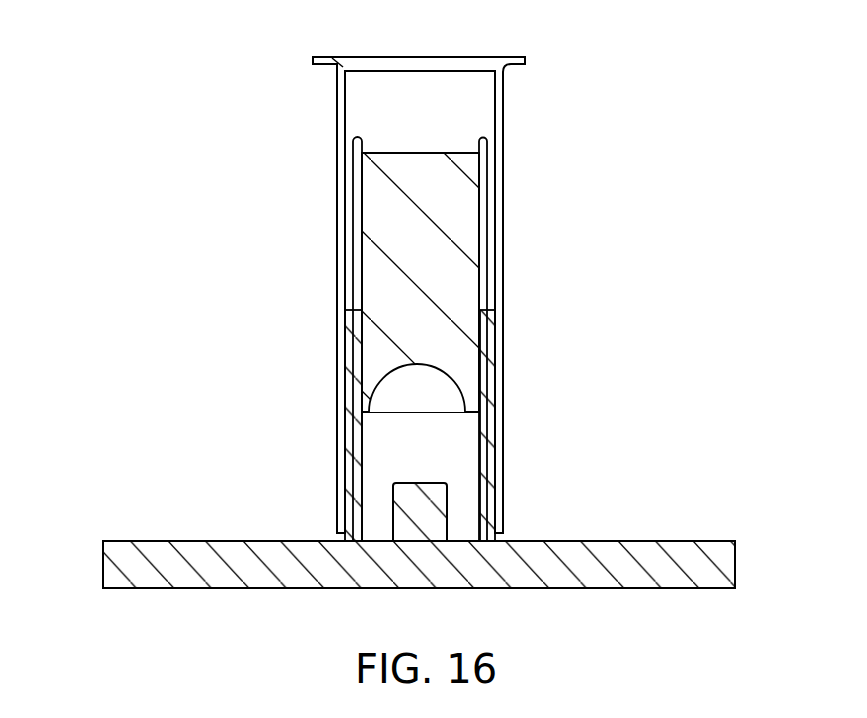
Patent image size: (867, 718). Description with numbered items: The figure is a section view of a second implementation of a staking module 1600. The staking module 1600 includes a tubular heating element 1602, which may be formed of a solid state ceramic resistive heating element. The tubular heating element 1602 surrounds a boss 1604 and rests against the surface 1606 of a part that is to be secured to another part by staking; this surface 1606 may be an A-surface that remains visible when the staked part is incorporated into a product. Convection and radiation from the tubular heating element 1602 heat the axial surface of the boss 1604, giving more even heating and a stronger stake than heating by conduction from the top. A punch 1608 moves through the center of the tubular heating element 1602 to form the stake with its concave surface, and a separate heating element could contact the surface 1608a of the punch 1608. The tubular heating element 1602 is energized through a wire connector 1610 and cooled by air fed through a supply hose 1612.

The staking module 1600 is at (162, 110).
The tubular heating element 1602 is at (488, 378).
The boss 1604 is at (418, 505).
The surface 1606 is at (565, 540).
The punch 1608 is at (410, 393).
The surface of the punch 1608a is at (403, 153).
The wire connector 1610 is at (483, 195).
The supply hose 1612 is at (355, 213).